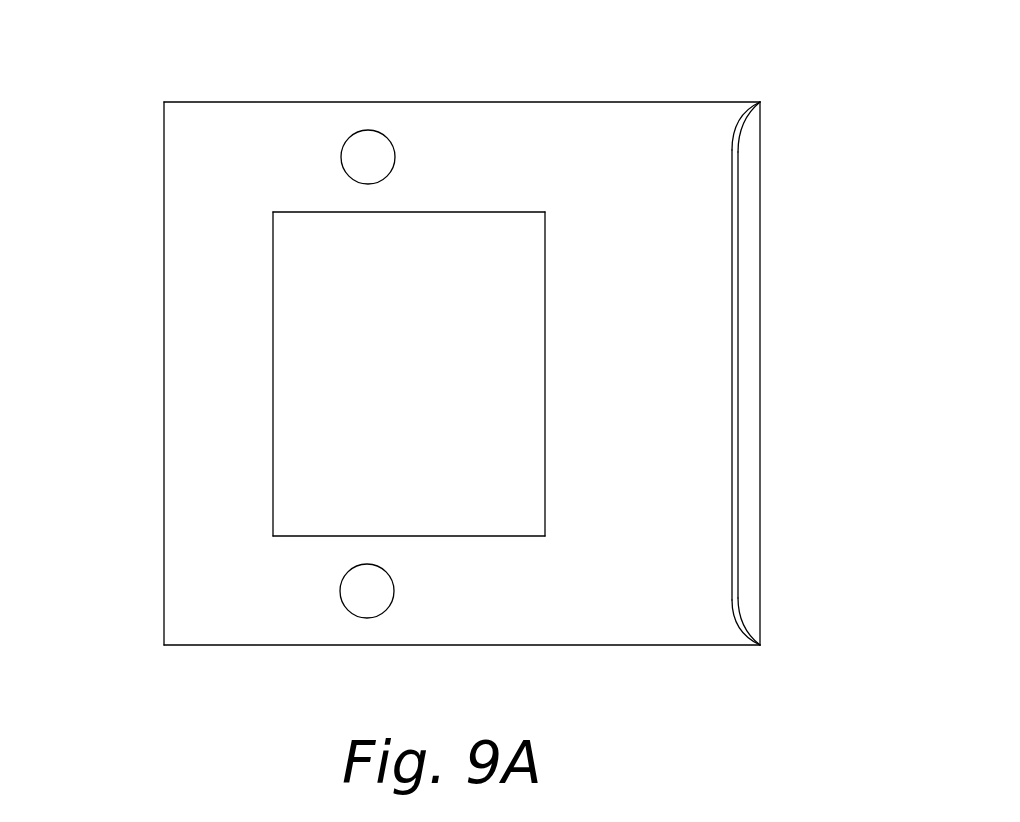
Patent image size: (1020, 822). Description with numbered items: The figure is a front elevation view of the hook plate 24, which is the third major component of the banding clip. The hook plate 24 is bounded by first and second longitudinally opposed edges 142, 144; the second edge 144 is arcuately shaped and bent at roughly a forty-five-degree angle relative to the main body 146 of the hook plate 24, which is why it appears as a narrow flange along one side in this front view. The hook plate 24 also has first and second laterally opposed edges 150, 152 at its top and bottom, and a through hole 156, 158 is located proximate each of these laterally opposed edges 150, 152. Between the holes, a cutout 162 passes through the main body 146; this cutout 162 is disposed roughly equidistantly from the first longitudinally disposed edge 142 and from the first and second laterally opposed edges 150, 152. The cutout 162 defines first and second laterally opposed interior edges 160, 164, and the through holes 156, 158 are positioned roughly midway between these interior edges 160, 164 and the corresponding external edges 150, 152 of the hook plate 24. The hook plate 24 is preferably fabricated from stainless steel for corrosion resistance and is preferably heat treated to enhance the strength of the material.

The hook plate 24 is at (705, 150).
The first longitudinally opposed edge 142 is at (164, 478).
The second longitudinally opposed edge 144 is at (760, 349).
The main body 146 is at (508, 615).
The first laterally opposed edge 150 is at (548, 102).
The second laterally opposed edge 152 is at (665, 645).
The through hole 156 is at (373, 162).
The through hole 158 is at (360, 598).
The first laterally opposed interior edge 160 is at (348, 212).
The cutout 162 is at (337, 364).
The second laterally opposed interior edge 164 is at (358, 536).